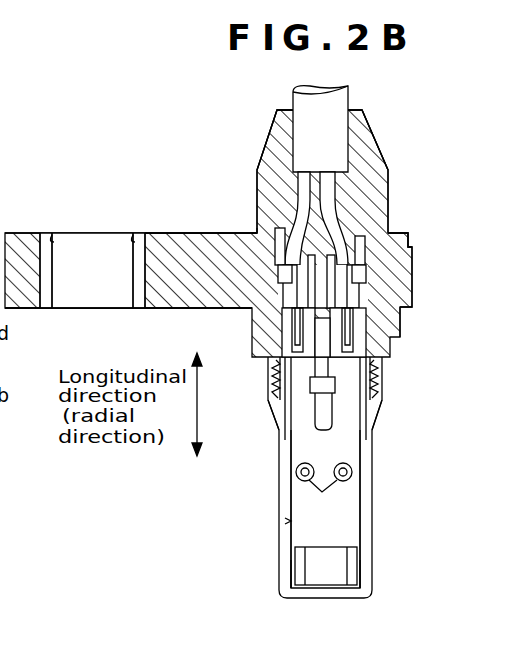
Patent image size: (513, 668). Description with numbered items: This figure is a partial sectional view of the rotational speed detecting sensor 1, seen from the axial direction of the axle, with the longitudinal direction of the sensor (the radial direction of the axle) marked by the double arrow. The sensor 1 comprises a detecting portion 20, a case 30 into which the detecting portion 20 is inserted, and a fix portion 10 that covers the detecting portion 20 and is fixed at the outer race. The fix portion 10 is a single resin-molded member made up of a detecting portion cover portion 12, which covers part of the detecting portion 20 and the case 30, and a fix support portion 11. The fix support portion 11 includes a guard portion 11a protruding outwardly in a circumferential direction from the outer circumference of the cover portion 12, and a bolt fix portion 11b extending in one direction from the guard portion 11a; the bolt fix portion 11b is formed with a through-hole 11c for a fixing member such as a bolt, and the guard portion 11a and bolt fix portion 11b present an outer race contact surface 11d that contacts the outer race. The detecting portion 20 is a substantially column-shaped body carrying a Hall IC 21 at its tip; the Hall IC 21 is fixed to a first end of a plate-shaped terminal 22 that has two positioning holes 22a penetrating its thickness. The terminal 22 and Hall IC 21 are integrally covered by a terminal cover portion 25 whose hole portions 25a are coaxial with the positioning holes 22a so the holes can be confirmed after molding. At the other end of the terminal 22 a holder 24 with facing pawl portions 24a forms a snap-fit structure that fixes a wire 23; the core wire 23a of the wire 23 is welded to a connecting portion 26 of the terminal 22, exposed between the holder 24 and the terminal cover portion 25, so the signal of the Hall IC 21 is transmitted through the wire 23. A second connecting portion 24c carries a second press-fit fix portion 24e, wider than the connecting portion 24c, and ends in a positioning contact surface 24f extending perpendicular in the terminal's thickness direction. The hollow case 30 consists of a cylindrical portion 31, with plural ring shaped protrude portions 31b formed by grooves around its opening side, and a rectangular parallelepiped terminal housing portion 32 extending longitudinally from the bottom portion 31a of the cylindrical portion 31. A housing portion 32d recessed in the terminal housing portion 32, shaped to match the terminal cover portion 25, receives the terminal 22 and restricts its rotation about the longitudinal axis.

The rotational speed detecting sensor 1 is at (369, 123).
The fix portion 10 is at (392, 183).
The fix support portion 11 is at (413, 270).
The guard portion 11a is at (398, 233).
The bolt fix portion 11b is at (178, 224).
The through-hole 11c is at (52, 234).
The outer race contact surface 11d is at (166, 310).
The detecting portion cover portion 12 is at (380, 156).
The detecting portion 20 is at (373, 503).
The Hall IC 21 is at (357, 572).
The terminal 22 is at (258, 230).
The positioning holes 22a is at (322, 492).
The wire 23 is at (336, 182).
The core wire 23a is at (296, 331).
The holder 24 is at (283, 281).
The pawl portions 24a is at (278, 271).
The second connecting portion 24c is at (354, 340).
The second press-fit fix portion 24e is at (328, 384).
The positioning contact surfaces 24f is at (320, 431).
The terminal cover portion 25 is at (298, 546).
The hole portions 25a is at (296, 472).
The connecting portion 26 is at (284, 345).
The case 30 is at (284, 499).
The cylindrical portion 31 is at (374, 412).
The bottom portion 31a is at (270, 428).
The ring shaped protrude portions 31b is at (276, 381).
The terminal housing portion 32 is at (373, 527).
The housing portion 32d is at (284, 521).